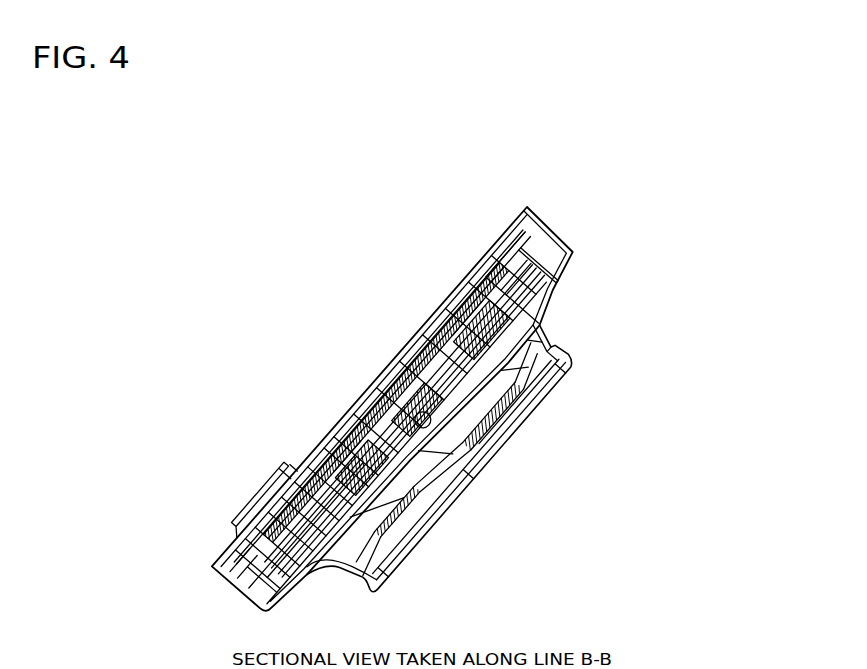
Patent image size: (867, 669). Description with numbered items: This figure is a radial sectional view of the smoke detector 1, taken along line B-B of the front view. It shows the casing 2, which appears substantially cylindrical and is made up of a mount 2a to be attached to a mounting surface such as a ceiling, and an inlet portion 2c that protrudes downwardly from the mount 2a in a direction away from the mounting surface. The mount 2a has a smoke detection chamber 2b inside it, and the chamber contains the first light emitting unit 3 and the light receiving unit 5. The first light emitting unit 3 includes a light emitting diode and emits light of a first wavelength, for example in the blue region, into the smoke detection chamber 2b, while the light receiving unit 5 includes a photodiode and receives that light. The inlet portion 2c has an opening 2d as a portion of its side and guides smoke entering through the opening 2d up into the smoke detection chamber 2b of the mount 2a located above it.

The smoke detector 1 is at (318, 179).
The casing 2 is at (358, 252).
The mount 2a is at (502, 240).
The smoke detection chamber 2b is at (362, 392).
The inlet portion 2c is at (546, 407).
The opening 2d is at (556, 344).
The first light emitting unit 3 is at (325, 423).
The light receiving unit 5 is at (442, 297).